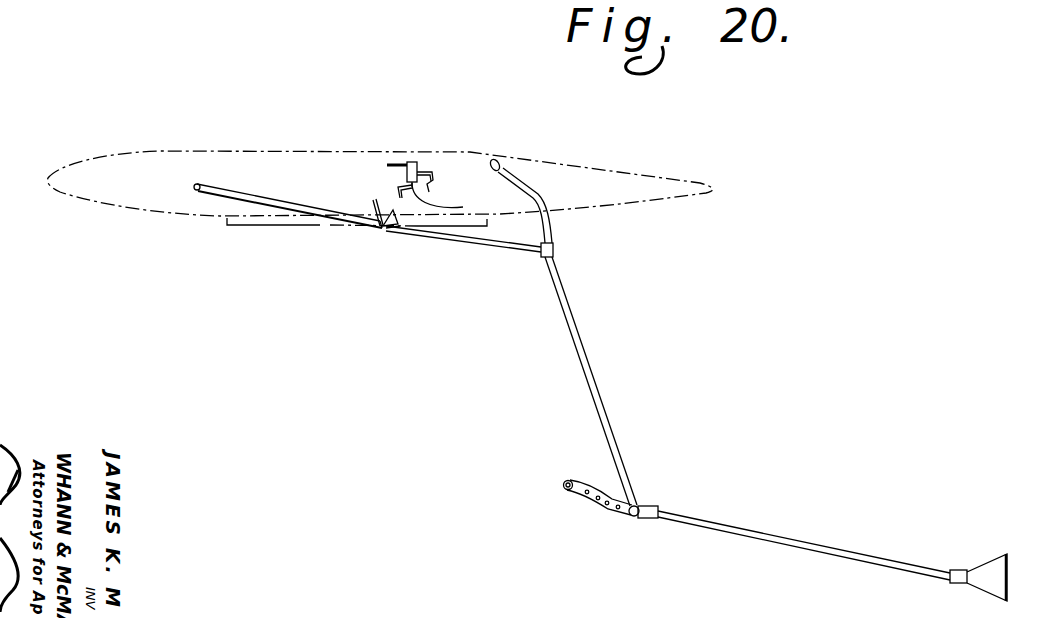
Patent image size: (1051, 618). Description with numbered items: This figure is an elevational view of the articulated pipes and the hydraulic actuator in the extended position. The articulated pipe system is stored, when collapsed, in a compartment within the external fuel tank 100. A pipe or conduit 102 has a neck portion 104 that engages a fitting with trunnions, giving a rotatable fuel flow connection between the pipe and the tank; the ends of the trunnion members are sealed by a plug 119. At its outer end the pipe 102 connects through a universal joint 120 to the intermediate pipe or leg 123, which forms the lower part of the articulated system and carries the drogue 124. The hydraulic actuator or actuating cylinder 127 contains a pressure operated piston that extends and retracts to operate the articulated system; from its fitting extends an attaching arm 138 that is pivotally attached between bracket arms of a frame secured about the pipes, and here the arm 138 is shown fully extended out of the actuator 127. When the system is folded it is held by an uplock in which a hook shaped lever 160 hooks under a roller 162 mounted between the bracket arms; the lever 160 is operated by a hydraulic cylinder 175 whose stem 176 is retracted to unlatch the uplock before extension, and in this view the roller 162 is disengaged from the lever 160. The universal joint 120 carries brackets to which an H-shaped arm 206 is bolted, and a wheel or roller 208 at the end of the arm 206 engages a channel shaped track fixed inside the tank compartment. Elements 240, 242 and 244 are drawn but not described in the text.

The external fuel tank 100 is at (181, 148).
The pipe or conduit 102 is at (583, 357).
The neck portion 104 is at (536, 201).
The plug 119 is at (500, 159).
The universal joint 120 is at (627, 522).
The intermediate pipe or leg 123 is at (797, 540).
The drogue 124 is at (976, 568).
The hydraulic actuator or actuating cylinder 127 is at (256, 200).
The attaching arm 138 is at (443, 241).
The hook shaped lever 160 is at (387, 184).
The roller 162 is at (393, 228).
The hydraulic cylinder 175 is at (416, 162).
The stem 176 is at (461, 201).
The arm 206 is at (590, 501).
The wheel or roller 208 is at (563, 486).
The hook 240 is at (446, 195).
The pin 242 is at (372, 212).
The bar 244 is at (396, 158).